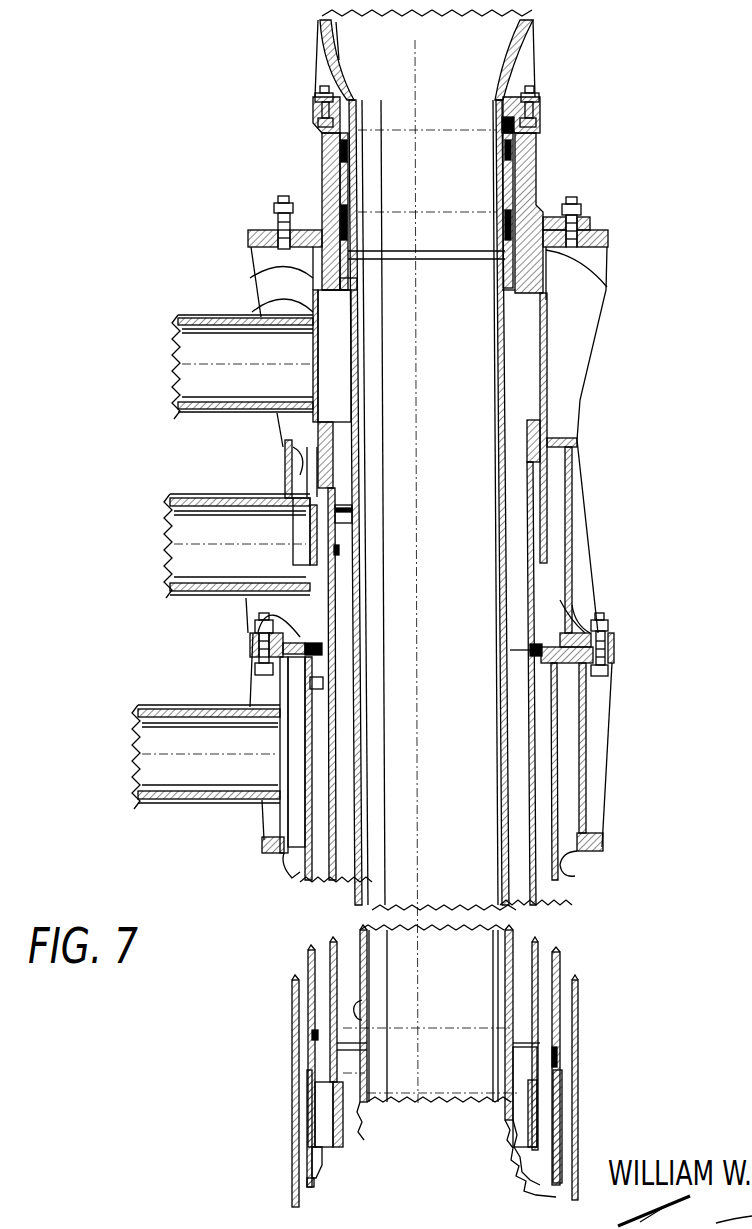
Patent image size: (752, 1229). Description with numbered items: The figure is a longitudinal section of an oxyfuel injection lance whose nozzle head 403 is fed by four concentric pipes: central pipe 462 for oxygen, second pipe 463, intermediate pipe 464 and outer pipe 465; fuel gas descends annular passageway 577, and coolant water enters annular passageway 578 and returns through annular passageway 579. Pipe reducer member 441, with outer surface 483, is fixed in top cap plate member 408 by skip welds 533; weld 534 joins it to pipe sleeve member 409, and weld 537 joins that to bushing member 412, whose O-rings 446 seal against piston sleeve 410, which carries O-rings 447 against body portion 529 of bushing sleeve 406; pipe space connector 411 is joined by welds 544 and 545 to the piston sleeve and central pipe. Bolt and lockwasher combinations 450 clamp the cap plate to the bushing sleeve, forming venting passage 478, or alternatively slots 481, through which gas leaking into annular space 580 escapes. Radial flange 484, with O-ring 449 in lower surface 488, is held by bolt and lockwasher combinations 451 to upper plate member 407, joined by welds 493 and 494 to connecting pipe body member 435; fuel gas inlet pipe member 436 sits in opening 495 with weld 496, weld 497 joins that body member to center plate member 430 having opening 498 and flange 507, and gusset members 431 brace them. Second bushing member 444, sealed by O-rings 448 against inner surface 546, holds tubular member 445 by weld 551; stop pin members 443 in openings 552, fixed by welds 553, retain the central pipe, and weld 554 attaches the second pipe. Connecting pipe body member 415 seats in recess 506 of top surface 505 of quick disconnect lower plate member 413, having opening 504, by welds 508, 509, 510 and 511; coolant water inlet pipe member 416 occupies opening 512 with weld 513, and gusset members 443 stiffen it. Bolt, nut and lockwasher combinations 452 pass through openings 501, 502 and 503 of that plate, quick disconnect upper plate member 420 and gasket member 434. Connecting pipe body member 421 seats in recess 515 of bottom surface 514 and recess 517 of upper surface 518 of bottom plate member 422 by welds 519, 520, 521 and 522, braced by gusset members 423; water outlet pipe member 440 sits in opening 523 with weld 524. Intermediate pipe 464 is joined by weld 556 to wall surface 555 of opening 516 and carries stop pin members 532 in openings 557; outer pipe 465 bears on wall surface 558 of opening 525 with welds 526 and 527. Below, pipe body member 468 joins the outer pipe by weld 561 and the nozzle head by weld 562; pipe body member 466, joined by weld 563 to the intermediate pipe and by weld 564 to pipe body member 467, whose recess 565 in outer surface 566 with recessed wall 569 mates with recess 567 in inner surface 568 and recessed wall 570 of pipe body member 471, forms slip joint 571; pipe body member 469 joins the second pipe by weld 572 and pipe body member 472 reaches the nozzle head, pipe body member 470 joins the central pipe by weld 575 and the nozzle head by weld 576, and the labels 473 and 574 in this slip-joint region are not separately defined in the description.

The outer tube 403 is at (560, 1190).
The upper right wall member 406 is at (534, 165).
The flange plate 407 is at (608, 238).
The nut 408 is at (541, 107).
The inner sleeve 409 is at (352, 163).
The upper left wall member 410 is at (330, 150).
The seal ring 411 is at (348, 268).
The seal 412 is at (504, 224).
The bolt 413 is at (252, 638).
The housing wall 415 is at (573, 511).
The pipe 416 is at (237, 546).
The flange 420 is at (253, 665).
The tube wall 421 is at (588, 787).
The end plate 422 is at (318, 52).
The housing outline 423 is at (608, 757).
The block 430 is at (318, 437).
The conical housing 431 is at (604, 316).
The flange 434 is at (610, 645).
The housing 435 is at (312, 264).
The pipe 436 is at (242, 367).
The pipe 440 is at (206, 757).
The bell mouth 441 is at (340, 28).
The tube 443 is at (340, 533).
The bearing block 444 is at (527, 434).
The bearing 445 is at (344, 534).
The seal 446 is at (347, 232).
The seal 447 is at (516, 154).
The bearing 448 is at (527, 470).
The curved wall 449 is at (550, 247).
The bolt 450 is at (318, 95).
The bolt 451 is at (280, 203).
The bolt 452 is at (580, 630).
The shaft 462 is at (368, 464).
The tube 463 is at (325, 604).
The tube 464 is at (340, 788).
The tube end 465 is at (292, 872).
The tube 466 is at (308, 993).
The tube 467 is at (308, 1045).
The outer tube 468 is at (293, 1100).
The tube 469 is at (340, 1058).
The tube 470 is at (367, 1035).
The tube 471 is at (307, 1150).
The tube end 472 is at (350, 1115).
The sleeve 473 is at (333, 1085).
The nut 478 is at (320, 112).
The hidden edge 481 is at (508, 92).
The bell mouth 483 is at (527, 48).
The flange plate 484 is at (590, 224).
The flange plate 488 is at (253, 236).
The housing wall 493 is at (555, 253).
The housing wall 494 is at (547, 223).
The chamber 495 is at (322, 380).
The housing 496 is at (307, 311).
The ring 497 is at (553, 437).
The tube 498 is at (572, 453).
The flange 501 is at (609, 633).
The nut 502 is at (607, 670).
The flange 503 is at (614, 655).
The seal 504 is at (323, 644).
The wall 505 is at (590, 598).
The wall 506 is at (573, 585).
The housing wall 507 is at (293, 452).
The ring 508 is at (580, 447).
The plate 509 is at (285, 478).
The housing wall 510 is at (258, 600).
The housing wall 511 is at (250, 620).
The tube 512 is at (296, 568).
The bracket 513 is at (285, 495).
The flange 514 is at (273, 668).
The tube 515 is at (587, 695).
The seal 516 is at (553, 650).
The end plate 517 is at (282, 852).
The chamber 518 is at (267, 831).
The flange 519 is at (593, 680).
The flange 520 is at (583, 688).
The end plate 521 is at (587, 836).
The end plate 522 is at (580, 833).
The tube 523 is at (334, 742).
The plate 524 is at (272, 706).
The lip 525 is at (580, 860).
The lip 526 is at (578, 851).
The tube end 527 is at (575, 868).
The shoulder 529 is at (530, 160).
The seal 532 is at (325, 681).
The liner 533 is at (318, 62).
The ring 534 is at (498, 130).
The seal 537 is at (502, 200).
The ring 544 is at (400, 255).
The seal 545 is at (356, 296).
The bearing 546 is at (336, 498).
The bearing 551 is at (537, 470).
The key 552 is at (354, 514).
The bearing 553 is at (325, 524).
The seal 554 is at (336, 550).
The seal 555 is at (548, 660).
The seal 556 is at (550, 647).
The tube 557 is at (312, 717).
The tube 558 is at (366, 854).
The plate 561 is at (303, 1075).
The plate 562 is at (300, 1176).
The tube 563 is at (310, 962).
The nut 564 is at (307, 1031).
The stop 565 is at (557, 1055).
The tube 566 is at (577, 1035).
The taper 567 is at (320, 1150).
The tube end 568 is at (314, 1180).
The plate 569 is at (560, 1066).
The sleeve 570 is at (343, 1143).
The plate 571 is at (558, 1092).
The ring 572 is at (345, 1048).
The plate 574 is at (533, 1112).
The inner tube 575 is at (367, 1005).
The sleeve 576 is at (520, 1098).
The tube 577 is at (357, 432).
The seal 578 is at (325, 620).
The housing 579 is at (293, 815).
The inner tube 580 is at (362, 122).